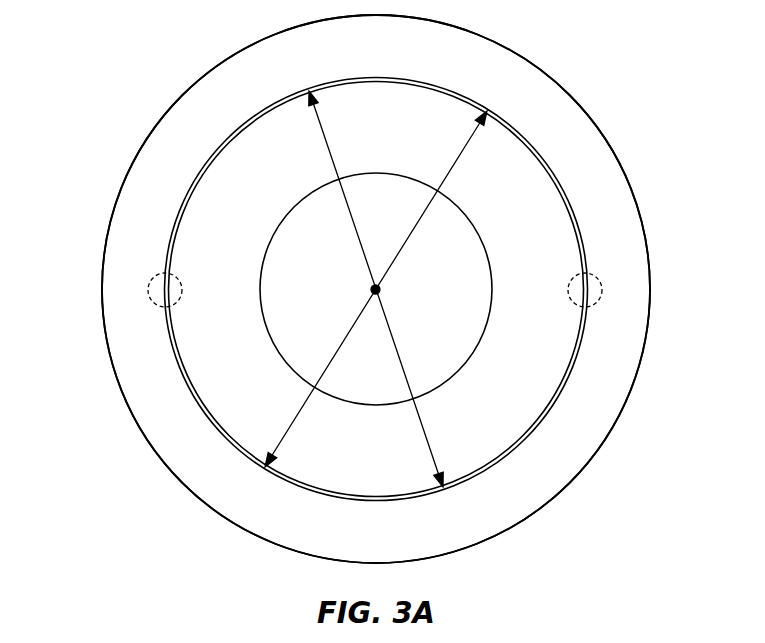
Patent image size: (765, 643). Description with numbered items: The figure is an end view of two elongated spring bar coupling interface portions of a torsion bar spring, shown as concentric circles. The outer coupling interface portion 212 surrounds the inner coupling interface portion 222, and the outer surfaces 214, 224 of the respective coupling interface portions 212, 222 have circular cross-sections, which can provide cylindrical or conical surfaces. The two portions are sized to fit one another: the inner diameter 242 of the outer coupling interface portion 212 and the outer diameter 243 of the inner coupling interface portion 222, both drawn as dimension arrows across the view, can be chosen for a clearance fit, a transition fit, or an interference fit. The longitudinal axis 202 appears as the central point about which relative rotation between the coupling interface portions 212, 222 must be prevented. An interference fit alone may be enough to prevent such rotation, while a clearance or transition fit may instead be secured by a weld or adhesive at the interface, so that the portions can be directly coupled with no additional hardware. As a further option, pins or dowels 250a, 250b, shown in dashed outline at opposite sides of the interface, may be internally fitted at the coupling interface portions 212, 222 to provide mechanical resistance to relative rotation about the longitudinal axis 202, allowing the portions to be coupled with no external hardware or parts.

The longitudinal axis 202 is at (375, 295).
The outer coupling interface portion 212 is at (222, 137).
The outer surface of outer coupling interface portion 214 is at (552, 172).
The inner coupling interface portion 222 is at (190, 193).
The outer surface of inner coupling interface portion 224 is at (573, 210).
The inner diameter 242 is at (327, 133).
The outer diameter 243 is at (395, 258).
The pin or dowel 250a is at (148, 290).
The pin or dowel 250b is at (603, 290).